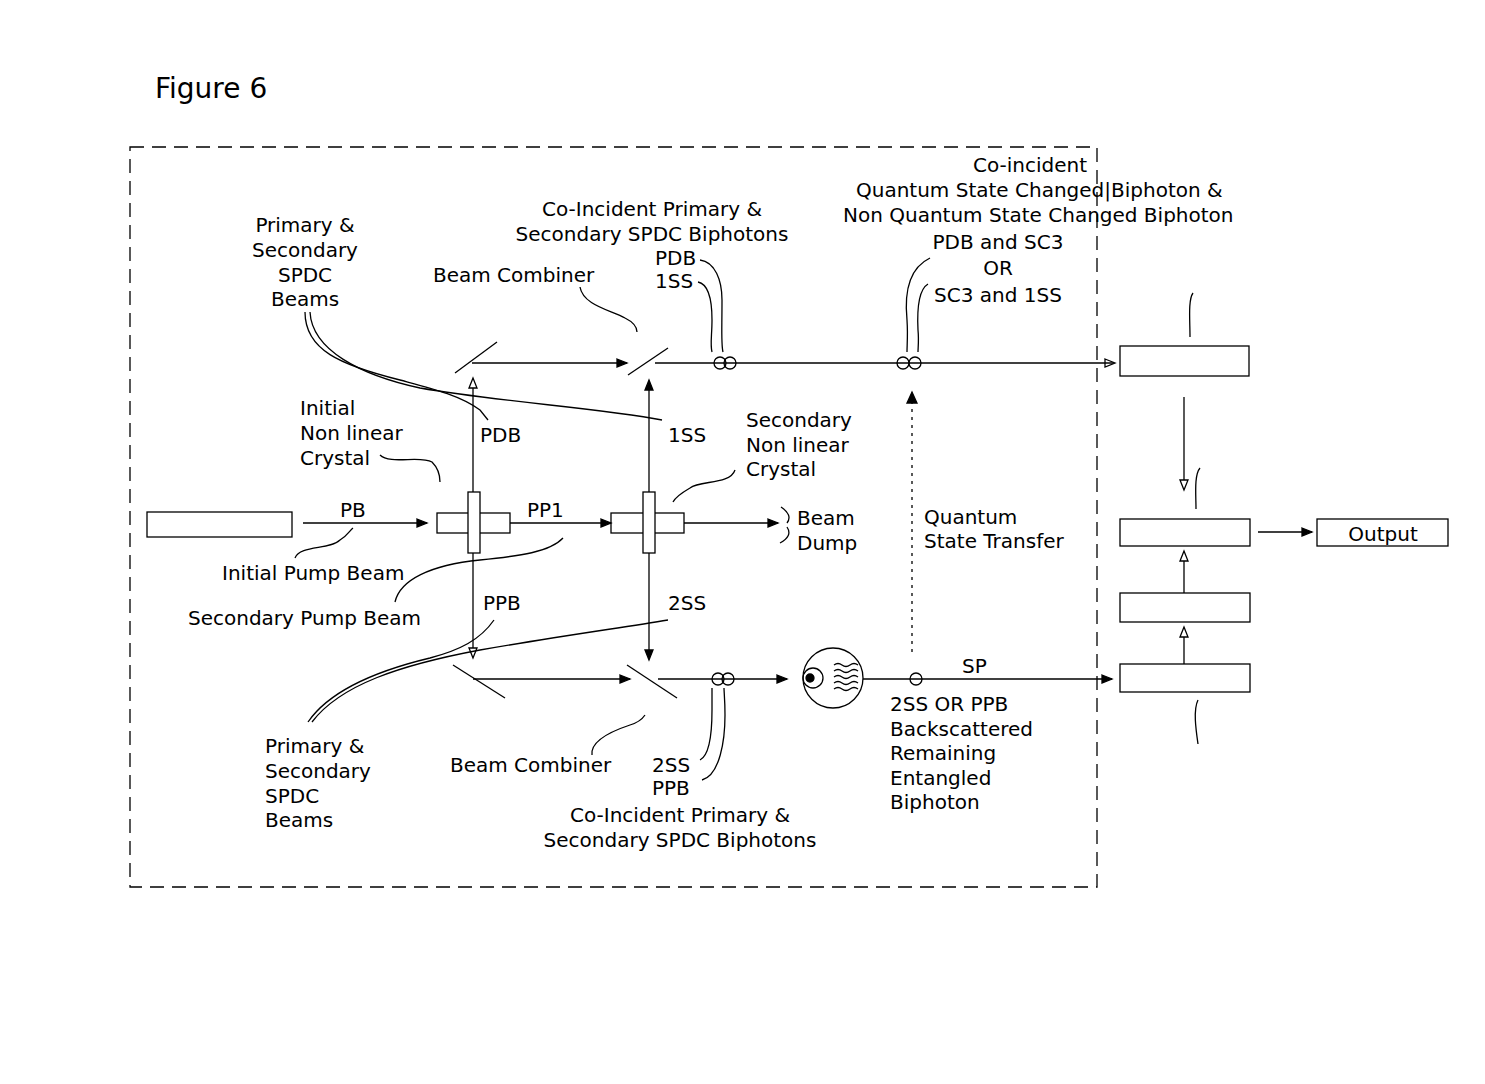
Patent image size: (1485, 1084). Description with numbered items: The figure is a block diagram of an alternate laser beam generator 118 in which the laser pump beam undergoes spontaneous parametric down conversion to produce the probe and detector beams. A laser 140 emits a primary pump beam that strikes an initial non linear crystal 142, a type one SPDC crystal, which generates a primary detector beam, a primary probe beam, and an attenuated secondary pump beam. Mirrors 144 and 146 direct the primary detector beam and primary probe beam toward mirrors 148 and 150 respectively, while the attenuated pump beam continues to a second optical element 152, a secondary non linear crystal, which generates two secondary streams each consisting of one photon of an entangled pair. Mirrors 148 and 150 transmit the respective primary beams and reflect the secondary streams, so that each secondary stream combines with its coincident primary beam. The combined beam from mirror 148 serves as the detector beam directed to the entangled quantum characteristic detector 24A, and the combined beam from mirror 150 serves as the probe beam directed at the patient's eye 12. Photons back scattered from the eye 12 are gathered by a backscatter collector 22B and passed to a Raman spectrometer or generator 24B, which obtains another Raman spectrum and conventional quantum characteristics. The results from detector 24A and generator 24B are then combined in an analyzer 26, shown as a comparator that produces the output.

The laser beam generator 118 is at (613, 505).
The laser 140 is at (219, 512).
The initial non linear crystal 142 is at (467, 519).
The mirror 144 is at (455, 344).
The mirror 146 is at (462, 696).
The mirror 148 is at (644, 354).
The mirror 150 is at (651, 689).
The second optical element 152 is at (642, 519).
The eye 12 is at (821, 691).
The Entangled Quantum Characteristic Detector 24A is at (1258, 323).
The analyzer 26 is at (1229, 493).
The polarization analyzer 24B is at (1260, 613).
The backscatter collector 22B is at (1222, 717).